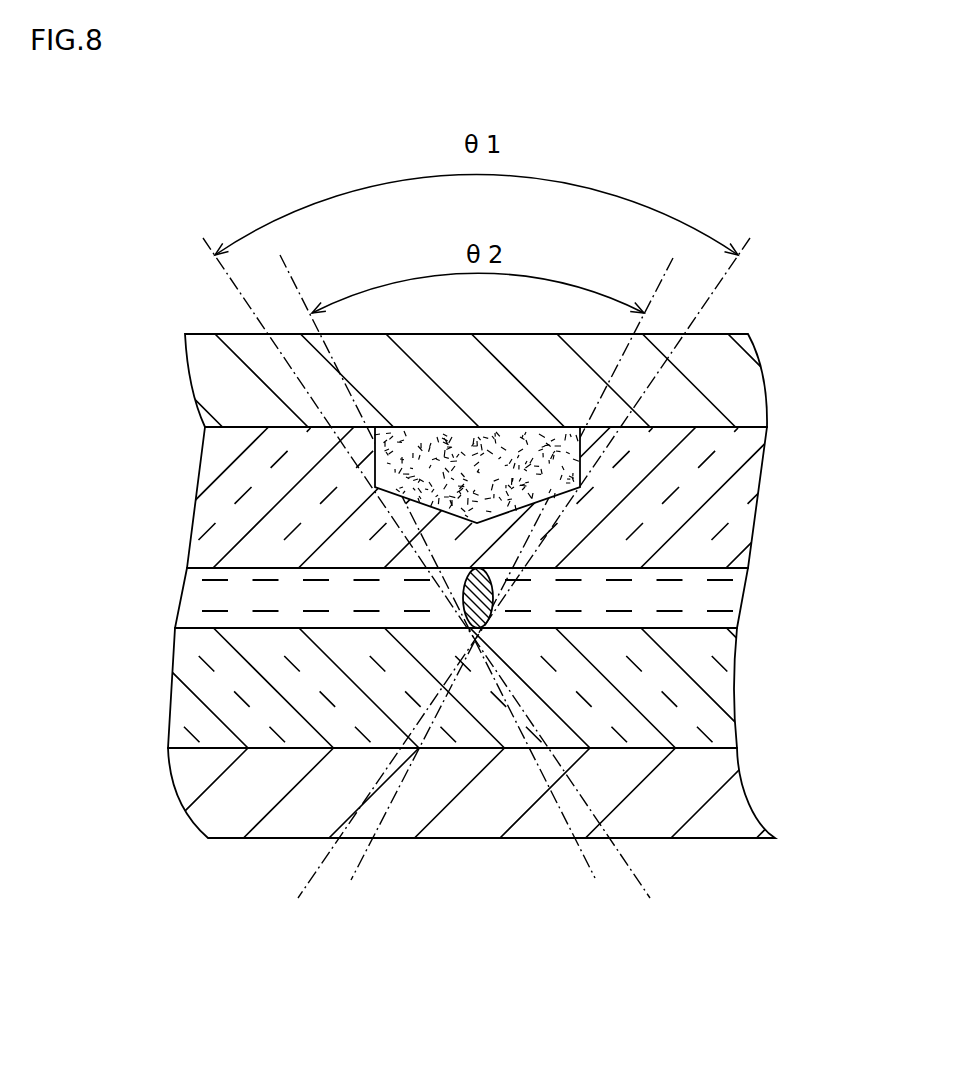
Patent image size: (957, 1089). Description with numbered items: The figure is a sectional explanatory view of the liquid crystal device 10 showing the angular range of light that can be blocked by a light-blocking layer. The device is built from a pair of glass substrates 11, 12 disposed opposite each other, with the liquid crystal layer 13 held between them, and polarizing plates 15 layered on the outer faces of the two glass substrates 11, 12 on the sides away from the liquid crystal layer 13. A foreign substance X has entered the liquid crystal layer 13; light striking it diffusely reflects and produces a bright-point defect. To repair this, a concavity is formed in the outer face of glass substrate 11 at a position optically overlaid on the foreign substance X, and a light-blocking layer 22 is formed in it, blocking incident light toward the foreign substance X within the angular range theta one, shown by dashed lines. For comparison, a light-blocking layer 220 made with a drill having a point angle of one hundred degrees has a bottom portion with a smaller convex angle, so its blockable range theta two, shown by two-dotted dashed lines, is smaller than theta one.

The liquid crystal device 10 is at (472, 610).
The glass substrate 11 is at (712, 479).
The glass substrate 12 is at (648, 737).
The liquid crystal layer 13 is at (697, 607).
The polarizing plate 15 is at (218, 383).
The light-blocking layer 22 is at (548, 482).
The light-blocking layer 220 is at (400, 433).
The foreign substance X is at (465, 608).